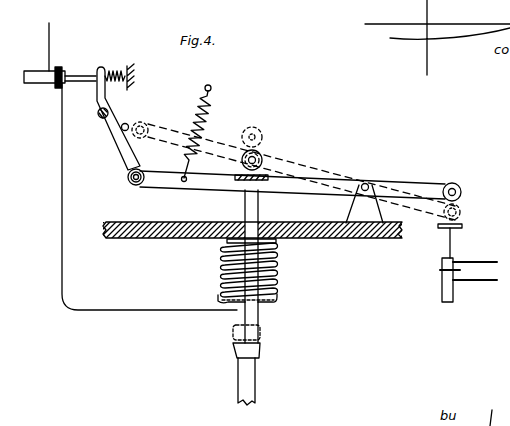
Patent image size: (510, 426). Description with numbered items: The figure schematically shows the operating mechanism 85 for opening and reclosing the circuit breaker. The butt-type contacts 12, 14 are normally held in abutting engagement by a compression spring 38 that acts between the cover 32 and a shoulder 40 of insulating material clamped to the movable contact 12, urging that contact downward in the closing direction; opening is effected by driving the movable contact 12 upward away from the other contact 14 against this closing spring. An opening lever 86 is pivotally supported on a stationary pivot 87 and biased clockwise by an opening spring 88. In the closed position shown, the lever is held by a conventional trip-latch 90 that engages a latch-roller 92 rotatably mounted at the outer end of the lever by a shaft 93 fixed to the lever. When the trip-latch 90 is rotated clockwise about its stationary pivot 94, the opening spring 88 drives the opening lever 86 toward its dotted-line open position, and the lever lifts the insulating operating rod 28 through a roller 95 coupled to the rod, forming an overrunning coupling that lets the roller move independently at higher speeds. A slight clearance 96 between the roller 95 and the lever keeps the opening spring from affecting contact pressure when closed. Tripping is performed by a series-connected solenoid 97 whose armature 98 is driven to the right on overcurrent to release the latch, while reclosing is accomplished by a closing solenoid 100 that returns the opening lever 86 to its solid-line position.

The movable contact 12 is at (237, 352).
The contact 14 is at (254, 378).
The insulating operating rod 28 is at (245, 205).
The cover 32 is at (163, 234).
The compression spring 38 is at (273, 265).
The shoulder 40 is at (273, 299).
The operating mechanism 85 is at (318, 152).
The opening lever 86 is at (287, 189).
The stationary pivot 87 is at (367, 183).
The opening spring 88 is at (200, 106).
The trip-latch 90 is at (129, 158).
The latch-roller 92 is at (128, 180).
The shaft 93 is at (141, 184).
The stationary pivot 94 is at (99, 117).
The roller 95 is at (262, 141).
The clearance 96 is at (241, 170).
The solenoid 97 is at (48, 90).
The armature 98 is at (36, 70).
The closing solenoid 100 is at (438, 268).